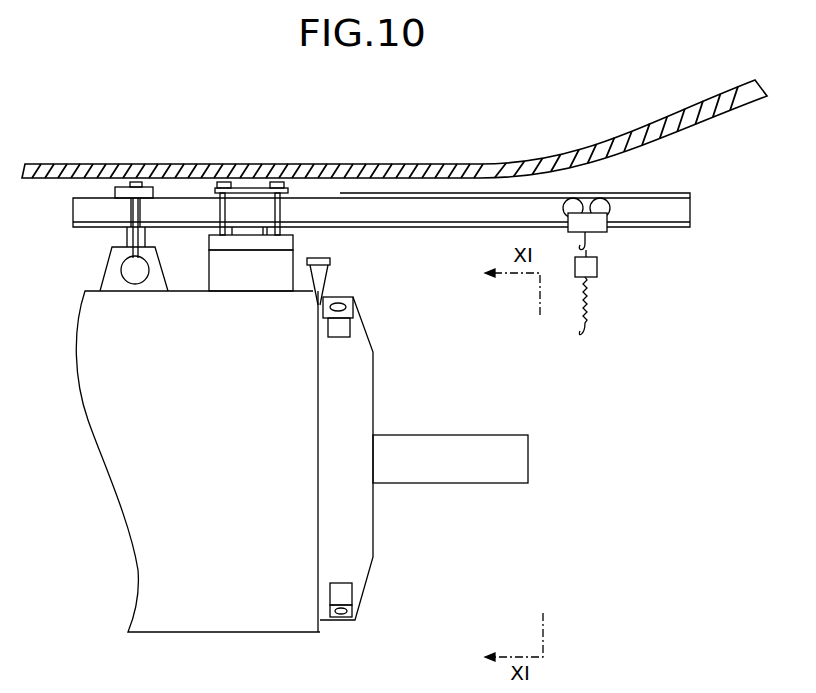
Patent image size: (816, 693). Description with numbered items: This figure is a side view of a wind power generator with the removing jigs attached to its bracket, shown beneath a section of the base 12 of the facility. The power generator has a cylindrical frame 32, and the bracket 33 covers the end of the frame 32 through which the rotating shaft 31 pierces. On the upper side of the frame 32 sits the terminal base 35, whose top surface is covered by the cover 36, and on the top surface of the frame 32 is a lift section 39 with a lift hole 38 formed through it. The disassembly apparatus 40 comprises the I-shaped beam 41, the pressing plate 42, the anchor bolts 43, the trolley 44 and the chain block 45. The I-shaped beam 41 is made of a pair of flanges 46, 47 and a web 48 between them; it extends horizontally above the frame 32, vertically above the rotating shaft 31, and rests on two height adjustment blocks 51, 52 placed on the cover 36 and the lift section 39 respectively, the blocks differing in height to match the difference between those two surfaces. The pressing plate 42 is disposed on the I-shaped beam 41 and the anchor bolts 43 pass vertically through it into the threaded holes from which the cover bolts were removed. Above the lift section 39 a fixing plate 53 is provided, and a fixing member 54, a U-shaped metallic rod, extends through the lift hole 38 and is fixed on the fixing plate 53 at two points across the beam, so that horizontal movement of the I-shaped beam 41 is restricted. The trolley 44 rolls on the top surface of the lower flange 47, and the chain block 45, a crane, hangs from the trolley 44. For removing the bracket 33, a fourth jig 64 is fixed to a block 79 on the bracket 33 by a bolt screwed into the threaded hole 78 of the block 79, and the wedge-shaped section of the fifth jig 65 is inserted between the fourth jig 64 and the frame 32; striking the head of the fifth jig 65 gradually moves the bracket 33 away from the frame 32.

The base 12 is at (690, 113).
The rotating shaft 31 is at (497, 457).
The frame 32 is at (217, 587).
The bracket 33 is at (352, 502).
The terminal base 35 is at (232, 270).
The cover 36 is at (295, 242).
The lift hole 38 is at (120, 262).
The lift section 39 is at (105, 268).
The disassembly apparatus 40 is at (418, 315).
The I-shaped beam 41 is at (418, 235).
The pressing plate 42 is at (262, 187).
The anchor bolts 43 is at (283, 212).
The trolley 44 is at (608, 233).
The chain block 45 is at (597, 275).
The flange 46 is at (678, 190).
The lower flange 47 is at (675, 223).
The web 48 is at (672, 208).
The height adjustment block 51 is at (253, 233).
The height adjustment block 52 is at (148, 233).
The fixing plate 53 is at (115, 192).
The fixing member 54 is at (142, 215).
The fourth jig 64 is at (350, 315).
The fifth jig 65 is at (317, 273).
The threaded hole 78 is at (338, 328).
The block 79 is at (347, 618).